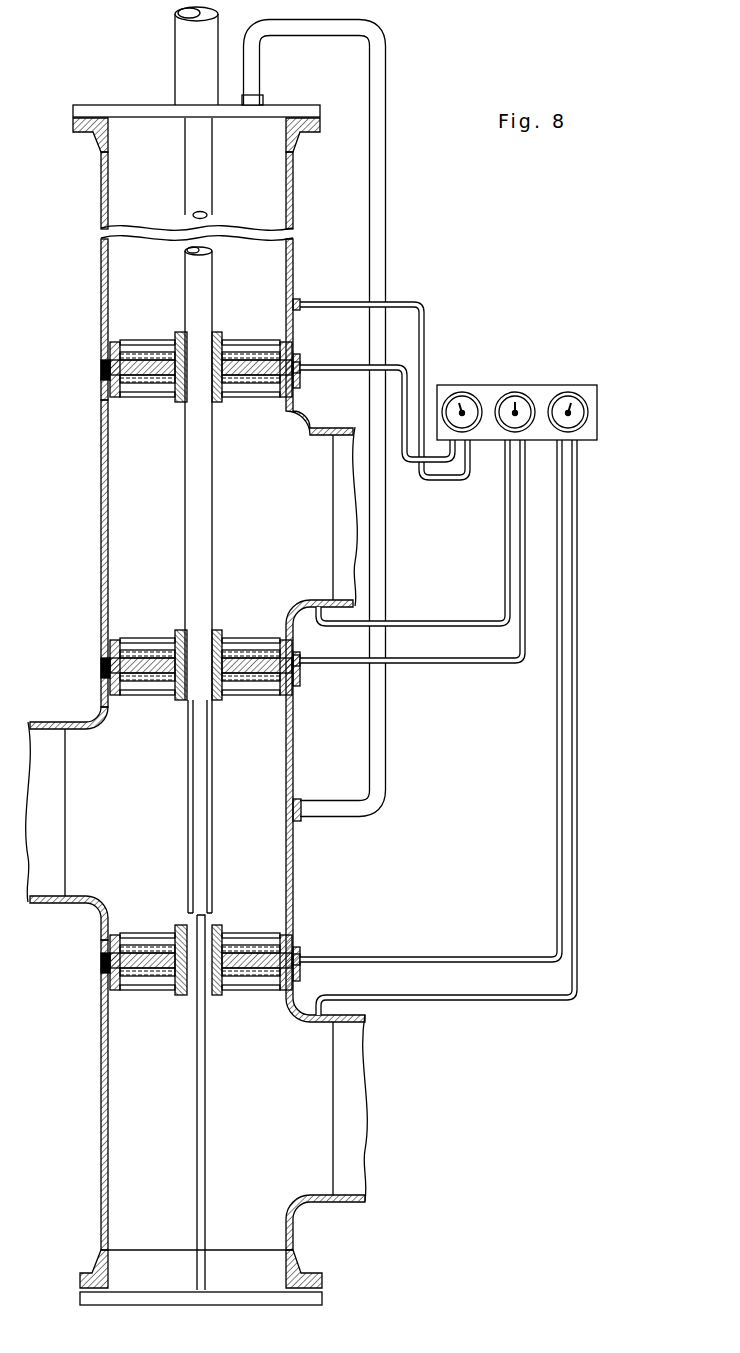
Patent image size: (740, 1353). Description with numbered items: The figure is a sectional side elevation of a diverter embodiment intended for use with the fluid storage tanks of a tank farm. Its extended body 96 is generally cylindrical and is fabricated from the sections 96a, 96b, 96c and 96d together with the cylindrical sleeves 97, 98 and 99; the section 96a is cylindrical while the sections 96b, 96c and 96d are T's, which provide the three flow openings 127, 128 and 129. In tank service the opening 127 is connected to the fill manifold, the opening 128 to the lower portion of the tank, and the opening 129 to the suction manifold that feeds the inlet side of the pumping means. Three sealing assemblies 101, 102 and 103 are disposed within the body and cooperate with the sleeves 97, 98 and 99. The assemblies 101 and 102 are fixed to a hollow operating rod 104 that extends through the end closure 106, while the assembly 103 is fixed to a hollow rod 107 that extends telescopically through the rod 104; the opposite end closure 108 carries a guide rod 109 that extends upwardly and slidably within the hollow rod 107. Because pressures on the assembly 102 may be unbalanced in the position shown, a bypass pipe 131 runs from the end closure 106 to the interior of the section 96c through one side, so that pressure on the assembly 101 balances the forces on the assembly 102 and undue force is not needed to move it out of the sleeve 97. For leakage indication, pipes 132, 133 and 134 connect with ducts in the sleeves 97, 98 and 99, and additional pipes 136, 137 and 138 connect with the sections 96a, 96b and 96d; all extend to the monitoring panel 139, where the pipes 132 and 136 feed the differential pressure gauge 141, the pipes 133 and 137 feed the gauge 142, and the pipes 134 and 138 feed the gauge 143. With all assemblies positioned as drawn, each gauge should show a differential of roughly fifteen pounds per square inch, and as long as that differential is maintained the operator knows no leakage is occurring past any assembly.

The extended body 96 is at (290, 214).
The body section 96a is at (100, 197).
The body section 96b is at (103, 553).
The body section 96c is at (101, 702).
The body section 96d is at (102, 1042).
The cylindrical sleeve 97 is at (281, 338).
The cylindrical sleeve 98 is at (250, 634).
The cylindrical sleeve 99 is at (250, 928).
The sealing assembly 101 is at (143, 330).
The sealing assembly 102 is at (144, 628).
The sealing assembly 103 is at (146, 923).
The hollow operating rod 104 is at (210, 202).
The end closure 106 is at (127, 104).
The hollow rod 107 is at (188, 736).
The end closure 108 is at (122, 1298).
The guide rod 109 is at (198, 1080).
The flow opening 127 is at (321, 527).
The flow opening 128 is at (112, 827).
The flow opening 129 is at (321, 1135).
The bypass pipe 131 is at (387, 95).
The pipe 132 is at (310, 372).
The pipe 133 is at (345, 666).
The pipe 134 is at (400, 957).
The pipe 136 is at (312, 300).
The pipe 137 is at (428, 622).
The pipe 138 is at (425, 997).
The monitoring panel 139 is at (564, 372).
The differential pressure operated gauge 141 is at (462, 392).
The differential pressure operated gauge 142 is at (515, 392).
The differential pressure operated gauge 143 is at (580, 392).